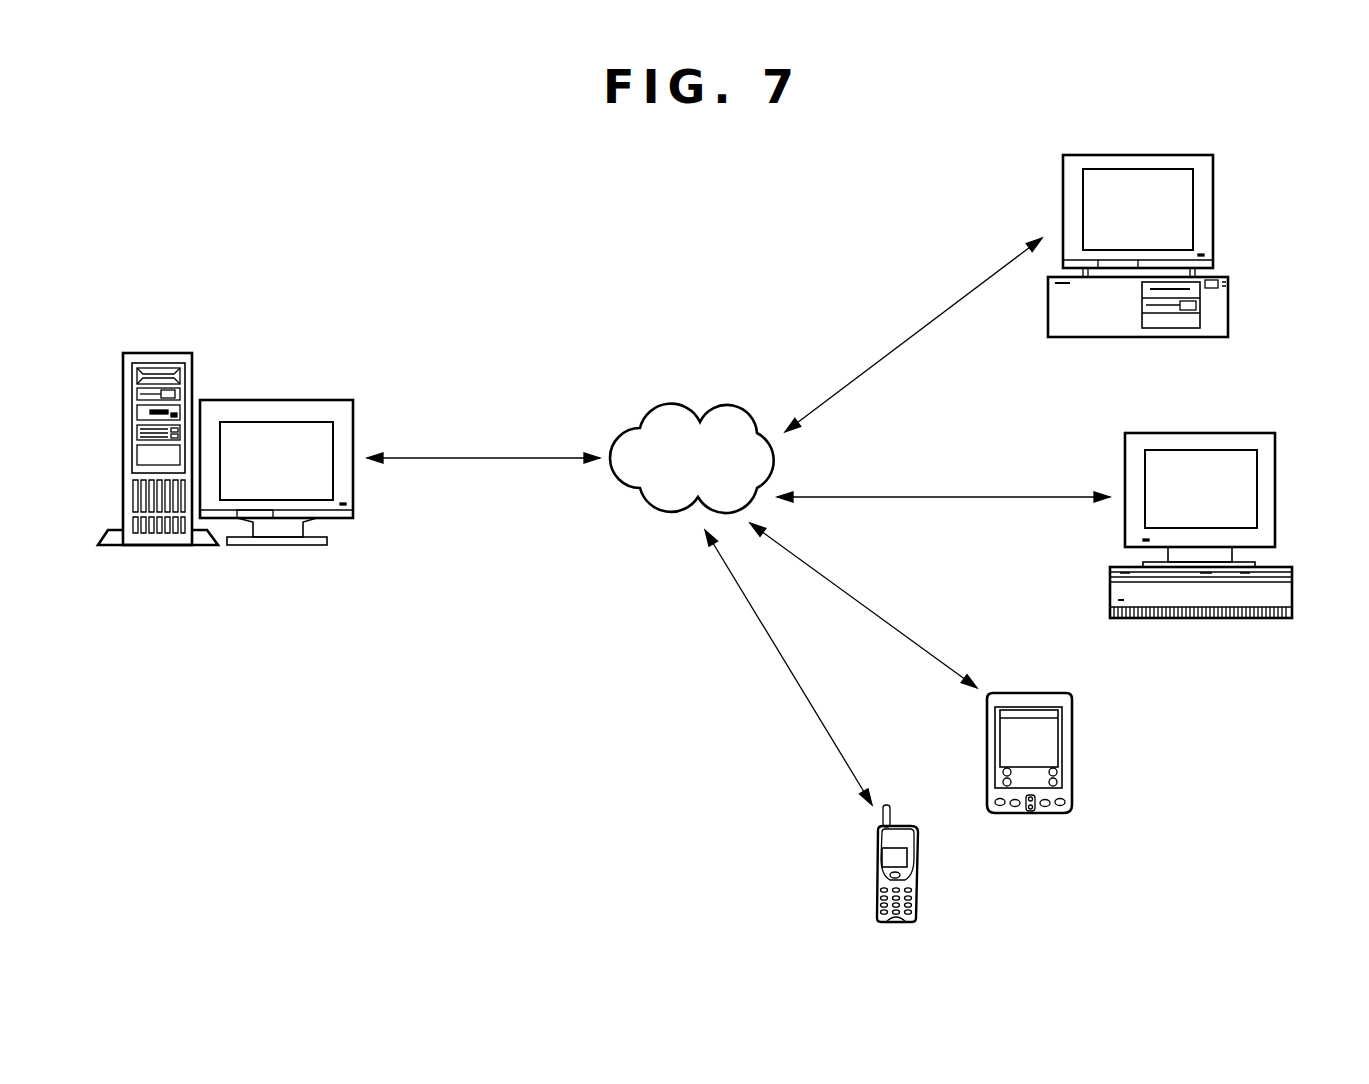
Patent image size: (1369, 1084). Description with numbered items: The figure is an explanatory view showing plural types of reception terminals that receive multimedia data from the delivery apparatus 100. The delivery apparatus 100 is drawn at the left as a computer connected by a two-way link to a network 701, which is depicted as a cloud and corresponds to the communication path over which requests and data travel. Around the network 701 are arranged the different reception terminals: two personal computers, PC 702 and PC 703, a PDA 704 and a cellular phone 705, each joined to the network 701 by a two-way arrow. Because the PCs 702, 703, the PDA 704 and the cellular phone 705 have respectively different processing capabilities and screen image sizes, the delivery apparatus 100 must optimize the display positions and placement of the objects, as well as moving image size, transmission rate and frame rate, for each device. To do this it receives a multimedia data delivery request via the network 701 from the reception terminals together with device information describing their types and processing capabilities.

The server computer 100 is at (168, 353).
The network 701 is at (752, 418).
The PC 702 is at (1190, 155).
The PC 703 is at (1250, 433).
The PDA 704 is at (1047, 693).
The cellular phone 705 is at (906, 826).